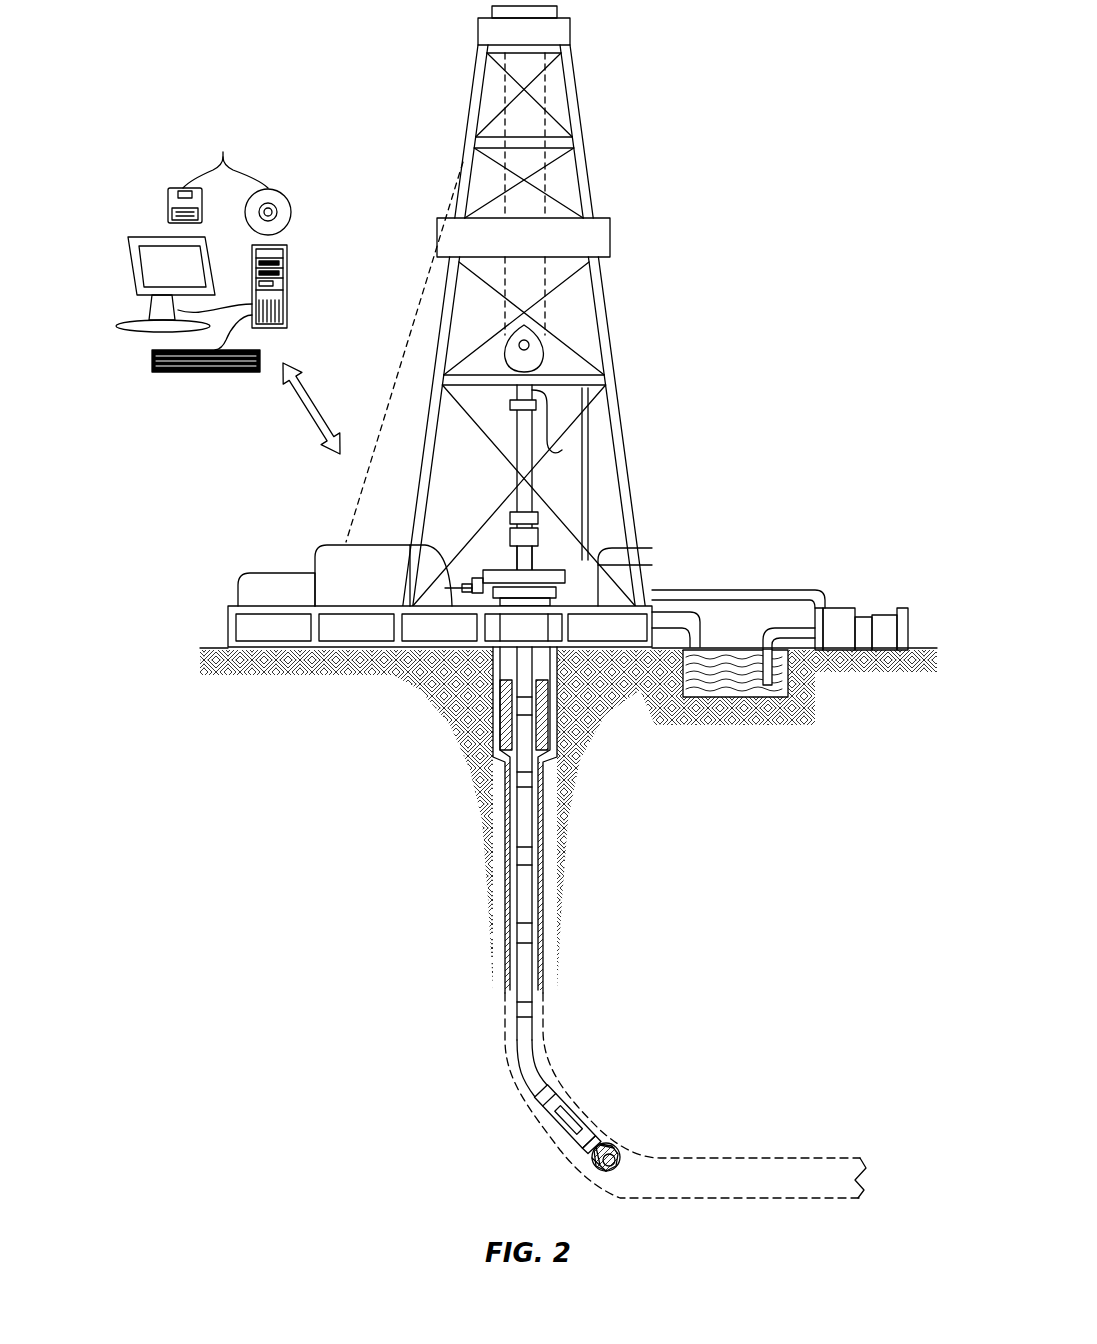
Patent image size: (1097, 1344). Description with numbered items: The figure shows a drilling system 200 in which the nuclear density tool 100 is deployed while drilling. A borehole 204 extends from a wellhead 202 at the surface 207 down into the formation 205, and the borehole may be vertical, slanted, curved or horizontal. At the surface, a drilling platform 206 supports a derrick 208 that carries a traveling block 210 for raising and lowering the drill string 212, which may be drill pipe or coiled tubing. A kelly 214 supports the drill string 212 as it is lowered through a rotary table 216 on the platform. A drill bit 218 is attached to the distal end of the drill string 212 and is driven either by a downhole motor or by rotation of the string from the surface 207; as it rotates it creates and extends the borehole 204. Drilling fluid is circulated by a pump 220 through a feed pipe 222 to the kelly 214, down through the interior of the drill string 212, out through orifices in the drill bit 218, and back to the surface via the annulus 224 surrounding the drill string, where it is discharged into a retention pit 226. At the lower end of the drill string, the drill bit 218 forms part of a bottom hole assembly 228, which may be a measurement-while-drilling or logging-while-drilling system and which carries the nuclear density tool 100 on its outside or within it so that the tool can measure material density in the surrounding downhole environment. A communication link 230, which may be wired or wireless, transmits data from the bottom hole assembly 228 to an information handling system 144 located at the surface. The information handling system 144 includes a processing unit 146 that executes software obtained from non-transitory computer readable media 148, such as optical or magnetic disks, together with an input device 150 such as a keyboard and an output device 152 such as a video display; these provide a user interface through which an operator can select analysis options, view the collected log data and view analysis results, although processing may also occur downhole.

The drilling system 200 is at (847, 106).
The information handling system 144 is at (204, 283).
The processing unit 146 is at (290, 258).
The non-transitory computer readable media 148 is at (229, 179).
The input device 150 is at (165, 374).
The output device 152 is at (135, 278).
The communication link 230 is at (298, 412).
The derrick 208 is at (583, 158).
The traveling block 210 is at (548, 347).
The kelly 214 is at (525, 432).
The rotary table 216 is at (560, 563).
The wellhead 202 is at (574, 592).
The drilling platform 206 is at (228, 622).
The feed pipe 222 is at (760, 590).
The pump 220 is at (840, 608).
The retention pit 226 is at (745, 700).
The surface 207 is at (918, 648).
The formation 205 is at (771, 944).
The borehole 204 is at (548, 852).
The annulus 224 is at (500, 852).
The drill string 212 is at (548, 835).
The nuclear density tool 100 is at (585, 1117).
The drill bit 218 is at (626, 1142).
The bottom hole assembly 228 is at (529, 1112).